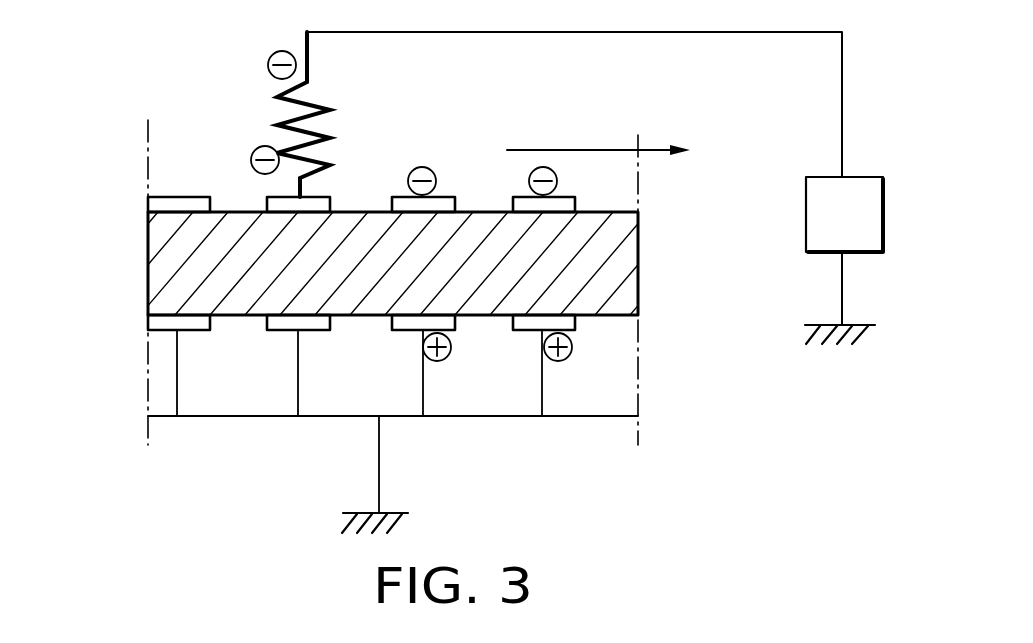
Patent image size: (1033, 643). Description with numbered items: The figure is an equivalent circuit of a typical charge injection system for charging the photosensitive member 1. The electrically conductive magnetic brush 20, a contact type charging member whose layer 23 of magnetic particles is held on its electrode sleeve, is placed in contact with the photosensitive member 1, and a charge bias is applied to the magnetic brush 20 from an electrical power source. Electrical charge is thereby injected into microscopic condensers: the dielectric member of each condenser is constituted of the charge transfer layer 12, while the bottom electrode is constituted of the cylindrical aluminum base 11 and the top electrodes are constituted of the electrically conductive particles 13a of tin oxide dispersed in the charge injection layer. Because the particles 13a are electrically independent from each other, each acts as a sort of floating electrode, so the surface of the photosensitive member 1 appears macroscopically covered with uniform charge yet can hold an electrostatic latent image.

The photosensitive member 1 is at (210, 146).
The aluminum base 11 is at (150, 323).
The charge transfer layer 12 is at (175, 263).
The electrically conductive particles 13a is at (167, 195).
The electrically conductive magnetic brush 20 is at (278, 112).
The layer of magnetic particles 23 is at (303, 114).